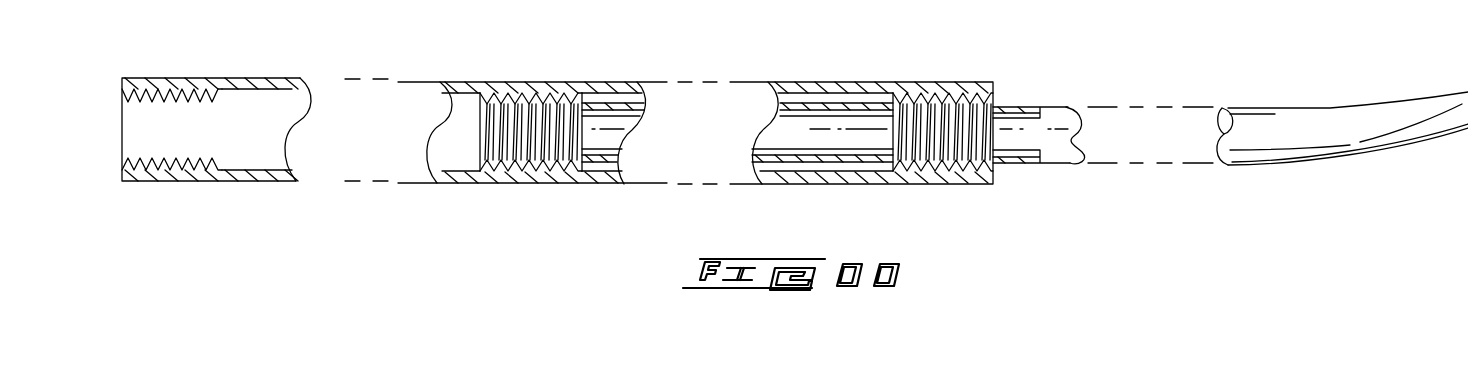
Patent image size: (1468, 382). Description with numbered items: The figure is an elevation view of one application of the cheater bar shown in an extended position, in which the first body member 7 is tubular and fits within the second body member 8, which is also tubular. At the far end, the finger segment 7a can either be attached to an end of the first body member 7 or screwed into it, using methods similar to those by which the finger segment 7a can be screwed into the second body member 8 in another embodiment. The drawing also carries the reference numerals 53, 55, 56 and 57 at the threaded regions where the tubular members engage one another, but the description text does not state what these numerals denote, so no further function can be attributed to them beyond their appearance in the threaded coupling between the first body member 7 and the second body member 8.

The first body member 7 is at (780, 139).
The finger segment 7a is at (1404, 121).
The second body member 8 is at (250, 176).
The threaded insert 53 is at (512, 121).
The threads 55 is at (968, 130).
The coupling body 56 is at (542, 92).
The nut 57 is at (943, 172).